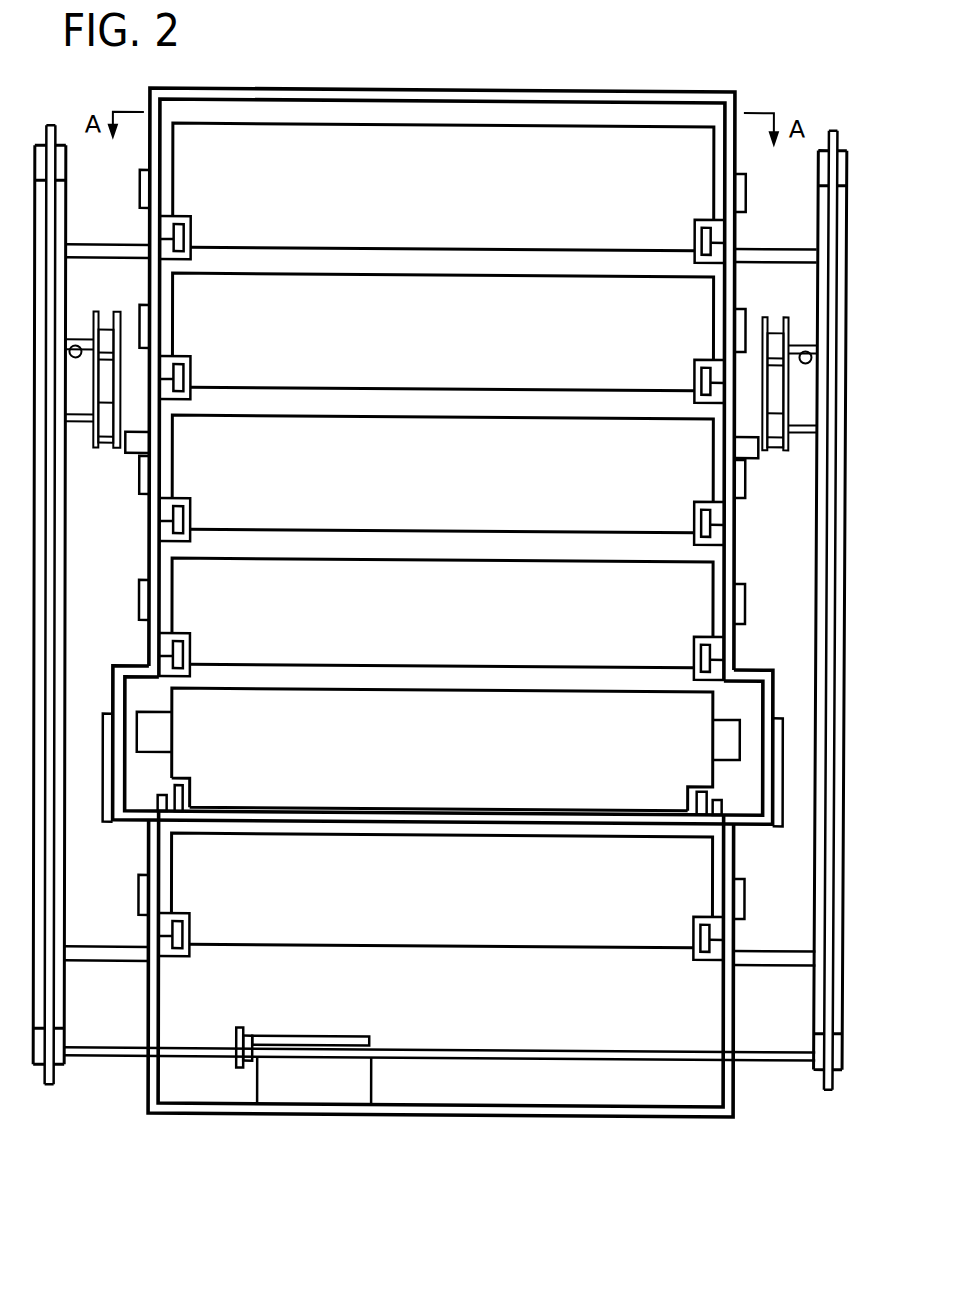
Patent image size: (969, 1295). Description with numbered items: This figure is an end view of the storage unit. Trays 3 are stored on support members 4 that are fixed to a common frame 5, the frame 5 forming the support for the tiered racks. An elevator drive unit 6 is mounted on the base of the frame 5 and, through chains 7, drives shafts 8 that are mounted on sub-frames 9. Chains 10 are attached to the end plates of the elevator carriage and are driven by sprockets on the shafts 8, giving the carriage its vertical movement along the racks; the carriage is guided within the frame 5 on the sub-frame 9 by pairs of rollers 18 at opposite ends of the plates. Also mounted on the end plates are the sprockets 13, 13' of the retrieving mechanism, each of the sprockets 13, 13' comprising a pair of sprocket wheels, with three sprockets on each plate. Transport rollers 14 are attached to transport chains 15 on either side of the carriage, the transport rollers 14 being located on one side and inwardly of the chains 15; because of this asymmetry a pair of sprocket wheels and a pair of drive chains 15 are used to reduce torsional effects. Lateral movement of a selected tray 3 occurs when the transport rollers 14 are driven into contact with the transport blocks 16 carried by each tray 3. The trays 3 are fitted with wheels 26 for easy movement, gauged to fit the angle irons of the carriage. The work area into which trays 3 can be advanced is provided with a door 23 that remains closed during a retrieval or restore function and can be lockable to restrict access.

The tray 3 is at (440, 751).
The support member 4 is at (185, 679).
The frame 5 is at (128, 667).
The elevator drive unit 6 is at (315, 1042).
The chain 7 is at (240, 1040).
The shaft 8 is at (662, 1050).
The sub-frame 9 is at (64, 597).
The chain 10 is at (46, 1085).
The sprocket 13 is at (109, 379).
The sprocket 13' is at (129, 359).
The transport roller 14 is at (133, 456).
The transport chain 15 is at (786, 318).
The transport block 16 is at (155, 745).
The roller 18 is at (78, 348).
The door 23 is at (748, 826).
The wheel 26 is at (182, 655).